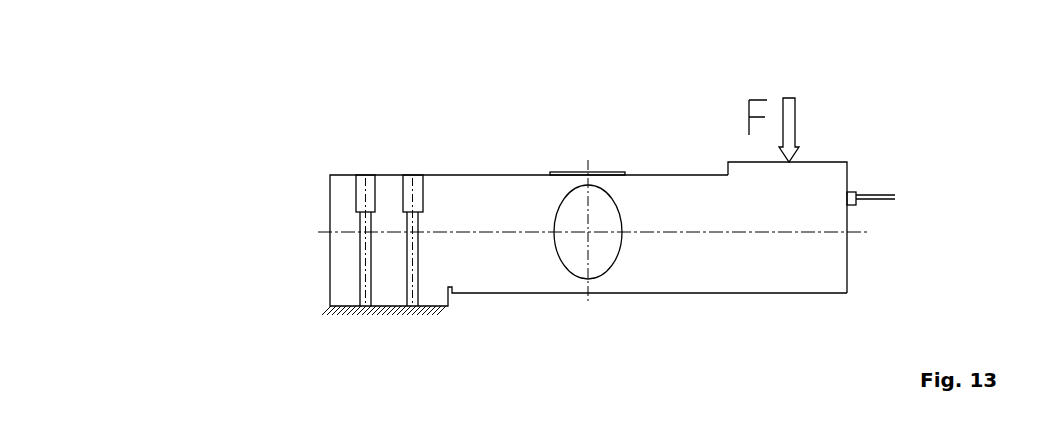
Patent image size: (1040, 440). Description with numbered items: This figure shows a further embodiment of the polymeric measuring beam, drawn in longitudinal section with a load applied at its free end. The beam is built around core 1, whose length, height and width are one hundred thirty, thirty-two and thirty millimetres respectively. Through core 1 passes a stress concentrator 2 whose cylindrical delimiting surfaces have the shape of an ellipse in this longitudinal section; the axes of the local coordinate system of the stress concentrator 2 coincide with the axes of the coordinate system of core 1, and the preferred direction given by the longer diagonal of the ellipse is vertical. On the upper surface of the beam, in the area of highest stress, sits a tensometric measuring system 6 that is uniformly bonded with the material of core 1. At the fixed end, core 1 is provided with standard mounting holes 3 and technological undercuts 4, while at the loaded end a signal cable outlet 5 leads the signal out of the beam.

The core 1 is at (338, 290).
The stress concentrator 2 is at (602, 275).
The mounting holes 3 is at (364, 280).
The technological undercuts 4 is at (726, 175).
The signal cable outlet 5 is at (895, 195).
The tensometric measuring system 6 is at (555, 173).